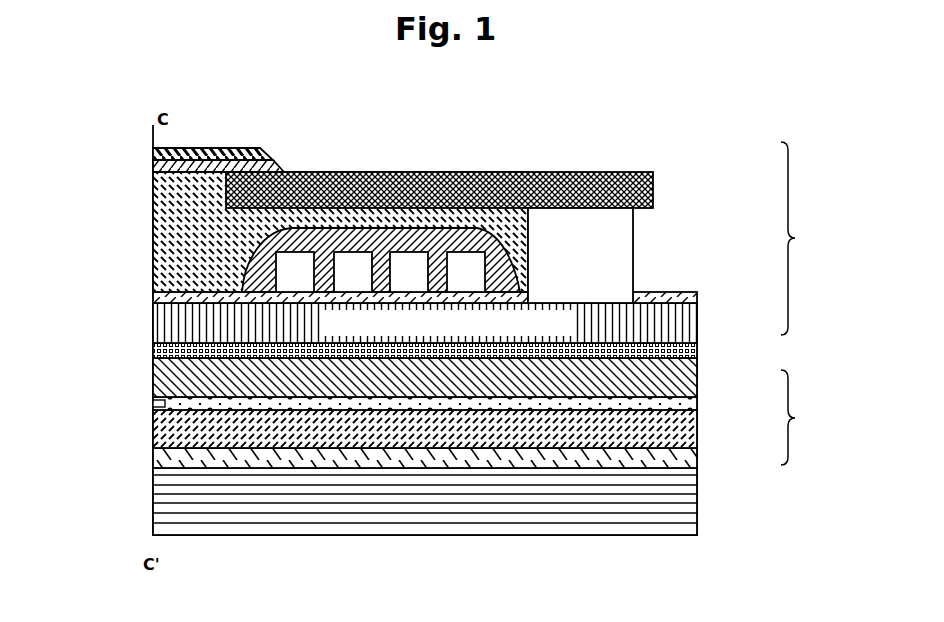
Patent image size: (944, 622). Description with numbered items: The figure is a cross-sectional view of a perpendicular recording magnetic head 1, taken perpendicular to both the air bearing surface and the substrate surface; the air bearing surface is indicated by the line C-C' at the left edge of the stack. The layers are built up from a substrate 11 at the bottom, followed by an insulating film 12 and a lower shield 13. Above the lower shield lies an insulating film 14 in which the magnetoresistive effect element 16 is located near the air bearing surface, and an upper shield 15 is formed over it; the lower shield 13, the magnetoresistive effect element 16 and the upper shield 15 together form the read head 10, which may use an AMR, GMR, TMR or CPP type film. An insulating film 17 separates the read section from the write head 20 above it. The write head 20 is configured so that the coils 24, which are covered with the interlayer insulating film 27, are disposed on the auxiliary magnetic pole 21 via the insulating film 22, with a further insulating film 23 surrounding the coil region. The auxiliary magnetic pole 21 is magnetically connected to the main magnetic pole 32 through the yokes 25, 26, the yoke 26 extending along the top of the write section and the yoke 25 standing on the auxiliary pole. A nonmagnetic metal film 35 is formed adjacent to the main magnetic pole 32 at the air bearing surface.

The magnetic head 1 is at (517, 126).
The read head 10 is at (808, 417).
The substrate 11 is at (680, 503).
The insulating film 12 is at (685, 455).
The lower shield 13 is at (680, 430).
The insulating film 14 is at (680, 404).
The upper shield 15 is at (697, 377).
The magnetoresistive effect element 16 is at (153, 404).
The insulating film 17 is at (697, 350).
The write head 20 is at (808, 238).
The auxiliary magnetic pole 21 is at (680, 322).
The insulating film 22 is at (153, 297).
The insulating film 23 is at (153, 255).
The coils 24 is at (296, 279).
The yoke 25 is at (605, 240).
The yoke 26 is at (653, 184).
The interlayer insulating film 27 is at (505, 279).
The main magnetic pole 32 is at (153, 168).
The nonmagnetic metal film 35 is at (153, 155).